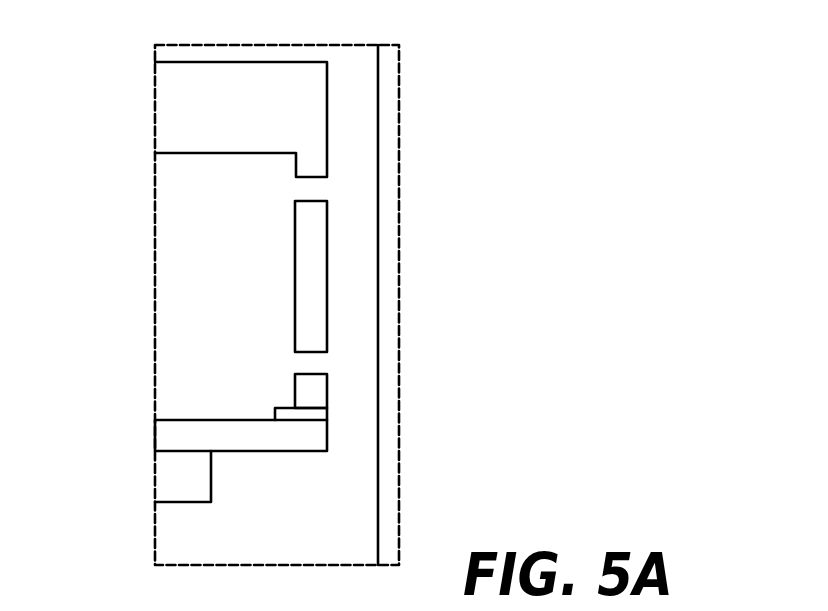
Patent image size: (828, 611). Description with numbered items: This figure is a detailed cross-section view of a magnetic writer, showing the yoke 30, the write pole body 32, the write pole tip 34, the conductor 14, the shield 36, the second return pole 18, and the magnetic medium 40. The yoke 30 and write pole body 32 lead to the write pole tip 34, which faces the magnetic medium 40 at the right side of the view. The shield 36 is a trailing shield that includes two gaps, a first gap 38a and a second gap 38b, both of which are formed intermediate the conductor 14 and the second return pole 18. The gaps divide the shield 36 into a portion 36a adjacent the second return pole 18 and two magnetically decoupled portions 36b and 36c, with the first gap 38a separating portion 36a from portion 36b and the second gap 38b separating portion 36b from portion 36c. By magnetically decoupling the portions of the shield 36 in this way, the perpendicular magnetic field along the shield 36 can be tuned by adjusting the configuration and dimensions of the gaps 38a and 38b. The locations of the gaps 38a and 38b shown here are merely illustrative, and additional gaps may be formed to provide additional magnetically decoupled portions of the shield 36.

The conductor 14 is at (327, 415).
The second return pole 18 is at (185, 115).
The yoke 30 is at (172, 488).
The write pole body 32 is at (177, 442).
The write pole tip 34 is at (258, 440).
The shield 36 is at (342, 274).
The shield portion 36a is at (322, 156).
The magnetically decoupled portion 36b is at (327, 272).
The magnetically decoupled portion 36c is at (320, 392).
The gap 38a is at (340, 189).
The gap 38b is at (338, 357).
The magnetic medium 40 is at (388, 68).